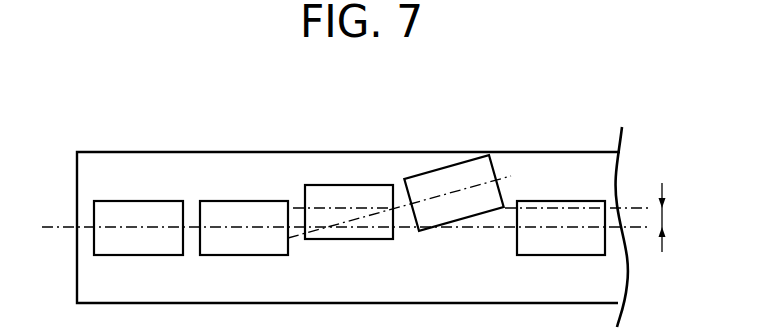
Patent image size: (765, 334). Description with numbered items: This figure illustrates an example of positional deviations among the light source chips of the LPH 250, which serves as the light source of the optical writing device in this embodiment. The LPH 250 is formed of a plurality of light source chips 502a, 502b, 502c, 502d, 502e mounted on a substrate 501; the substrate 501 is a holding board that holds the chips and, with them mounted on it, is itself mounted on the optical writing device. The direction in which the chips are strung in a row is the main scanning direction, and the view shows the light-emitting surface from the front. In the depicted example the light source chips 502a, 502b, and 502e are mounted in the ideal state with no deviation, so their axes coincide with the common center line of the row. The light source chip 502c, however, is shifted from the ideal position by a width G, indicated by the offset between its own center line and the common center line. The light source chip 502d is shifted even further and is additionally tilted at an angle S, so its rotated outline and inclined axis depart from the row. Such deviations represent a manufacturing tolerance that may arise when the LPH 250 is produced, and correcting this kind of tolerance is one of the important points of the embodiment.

The LPH 250 is at (70, 132).
The substrate 501 is at (607, 146).
The light source chip 502a is at (142, 201).
The light source chip 502b is at (247, 201).
The light source chip 502c is at (345, 185).
The light source chip 502d is at (425, 173).
The light source chip 502e is at (566, 201).
The angle S is at (474, 206).
The width G is at (665, 218).